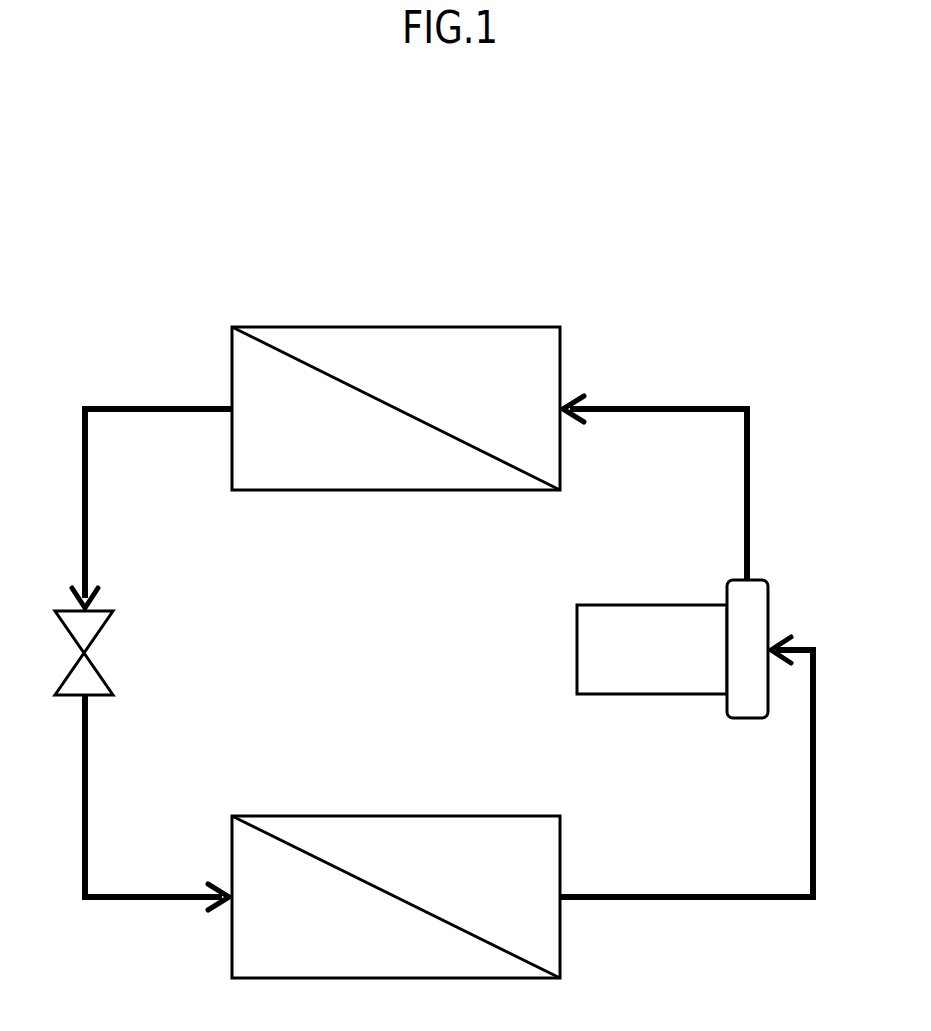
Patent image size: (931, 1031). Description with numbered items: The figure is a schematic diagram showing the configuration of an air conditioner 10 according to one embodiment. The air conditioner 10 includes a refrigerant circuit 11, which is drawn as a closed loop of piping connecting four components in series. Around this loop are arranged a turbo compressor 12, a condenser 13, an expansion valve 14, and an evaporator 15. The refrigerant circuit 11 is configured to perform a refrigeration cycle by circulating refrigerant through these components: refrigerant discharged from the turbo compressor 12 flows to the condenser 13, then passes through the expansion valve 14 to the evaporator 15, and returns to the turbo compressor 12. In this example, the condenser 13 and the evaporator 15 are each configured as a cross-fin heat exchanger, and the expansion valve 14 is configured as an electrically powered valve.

The air conditioner 10 is at (730, 326).
The refrigerant circuit 11 is at (143, 357).
The turbo compressor 12 is at (769, 581).
The condenser 13 is at (508, 327).
The expansion valve 14 is at (105, 611).
The evaporator 15 is at (560, 944).